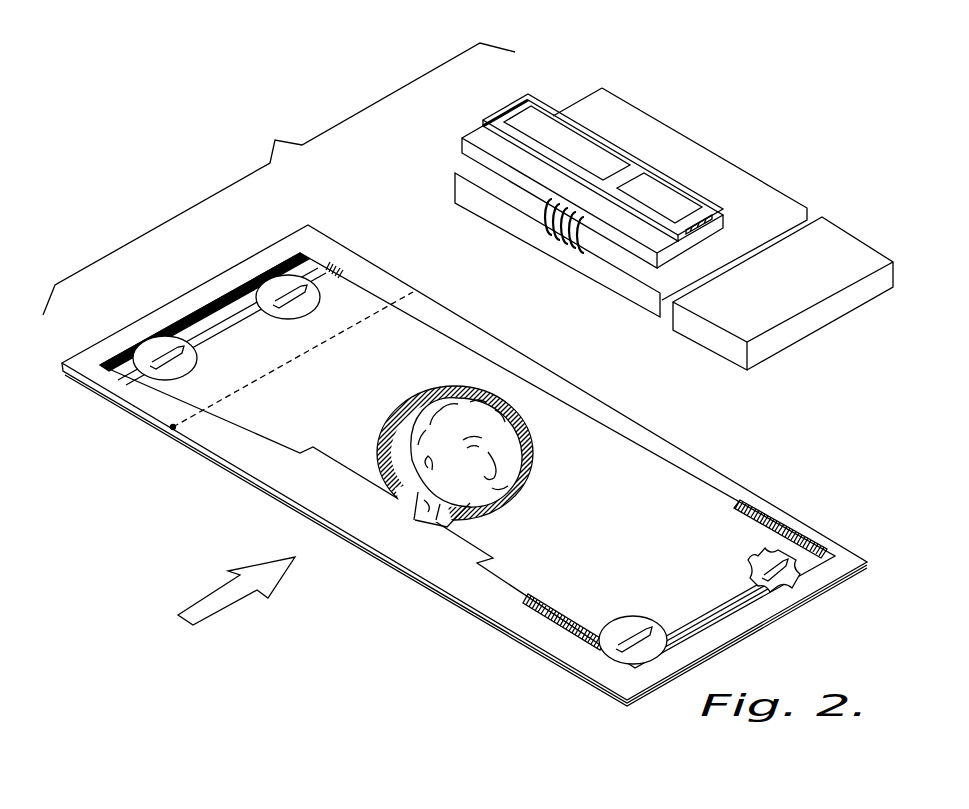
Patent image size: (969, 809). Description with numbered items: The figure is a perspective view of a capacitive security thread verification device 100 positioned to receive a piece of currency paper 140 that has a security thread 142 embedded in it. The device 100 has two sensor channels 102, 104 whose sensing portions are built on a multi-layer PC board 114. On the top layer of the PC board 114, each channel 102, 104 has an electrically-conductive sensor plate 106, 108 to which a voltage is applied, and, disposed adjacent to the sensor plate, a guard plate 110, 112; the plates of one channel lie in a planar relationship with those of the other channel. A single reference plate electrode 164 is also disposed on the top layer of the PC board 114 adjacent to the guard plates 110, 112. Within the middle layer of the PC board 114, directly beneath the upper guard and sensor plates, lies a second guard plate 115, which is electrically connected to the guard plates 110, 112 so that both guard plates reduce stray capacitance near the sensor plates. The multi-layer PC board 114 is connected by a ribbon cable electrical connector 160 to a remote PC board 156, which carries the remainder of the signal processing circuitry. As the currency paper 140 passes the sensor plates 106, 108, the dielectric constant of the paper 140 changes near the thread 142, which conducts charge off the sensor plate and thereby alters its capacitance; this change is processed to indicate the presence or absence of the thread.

The capacitive verification device 100 is at (563, 72).
The sensor channel 102 is at (603, 135).
The sensor channel 104 is at (688, 187).
The sensor plate 106 is at (533, 112).
The sensor plate 108 is at (697, 216).
The guard plate 110 is at (515, 118).
The guard plate 112 is at (685, 229).
The multi-layer PC board 114 is at (472, 136).
The second guard plate 115 is at (708, 236).
The currency paper 140 is at (375, 588).
The security thread 142 is at (173, 428).
The remote PC board 156 is at (640, 293).
The ribbon cable electrical connector 160 is at (565, 245).
The reference plate electrode 164 is at (525, 152).